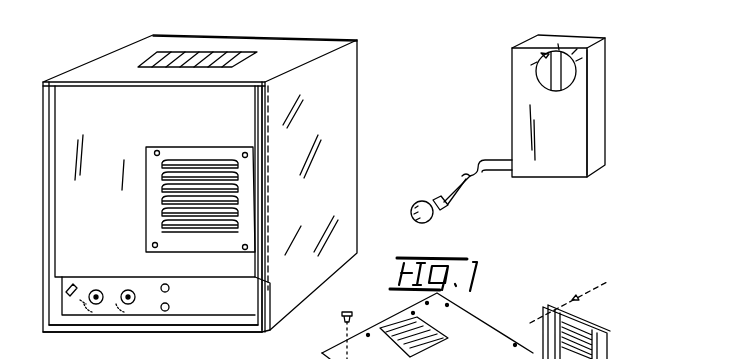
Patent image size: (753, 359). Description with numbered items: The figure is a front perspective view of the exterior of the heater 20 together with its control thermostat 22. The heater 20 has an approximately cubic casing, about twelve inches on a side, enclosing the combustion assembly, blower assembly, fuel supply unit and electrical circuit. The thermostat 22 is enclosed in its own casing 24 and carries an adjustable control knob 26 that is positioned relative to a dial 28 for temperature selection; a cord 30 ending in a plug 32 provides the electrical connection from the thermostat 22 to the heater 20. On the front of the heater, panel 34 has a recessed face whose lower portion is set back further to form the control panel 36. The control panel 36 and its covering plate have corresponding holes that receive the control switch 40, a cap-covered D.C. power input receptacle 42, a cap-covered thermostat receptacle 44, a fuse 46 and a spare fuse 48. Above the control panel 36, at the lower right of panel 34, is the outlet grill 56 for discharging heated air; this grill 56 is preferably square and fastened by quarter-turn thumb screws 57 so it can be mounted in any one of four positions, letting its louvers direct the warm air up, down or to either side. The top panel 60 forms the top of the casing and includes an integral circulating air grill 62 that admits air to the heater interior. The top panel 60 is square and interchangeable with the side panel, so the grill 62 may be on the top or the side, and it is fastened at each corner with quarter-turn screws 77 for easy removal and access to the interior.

The heater 20 is at (314, 29).
The control thermostat 22 is at (614, 58).
The casing 24 is at (597, 98).
The adjustable control knob 26 is at (536, 80).
The dial 28 is at (540, 57).
The cord 30 is at (464, 180).
The plug 32 is at (433, 219).
The panel 34 is at (248, 135).
The control panel 36 is at (248, 300).
The control switch 40 is at (72, 283).
The D.C. power input receptacle 42 is at (101, 289).
The thermostat receptacle 44 is at (134, 291).
The fuse 46 is at (170, 286).
The spare fuse 48 is at (172, 311).
The outlet grill 56 is at (205, 155).
The quarter-turn thumb screws 57 is at (153, 152).
The top panel 60 is at (323, 48).
The circulating air grill 62 is at (217, 52).
The quarter-turn screws 77 is at (350, 312).